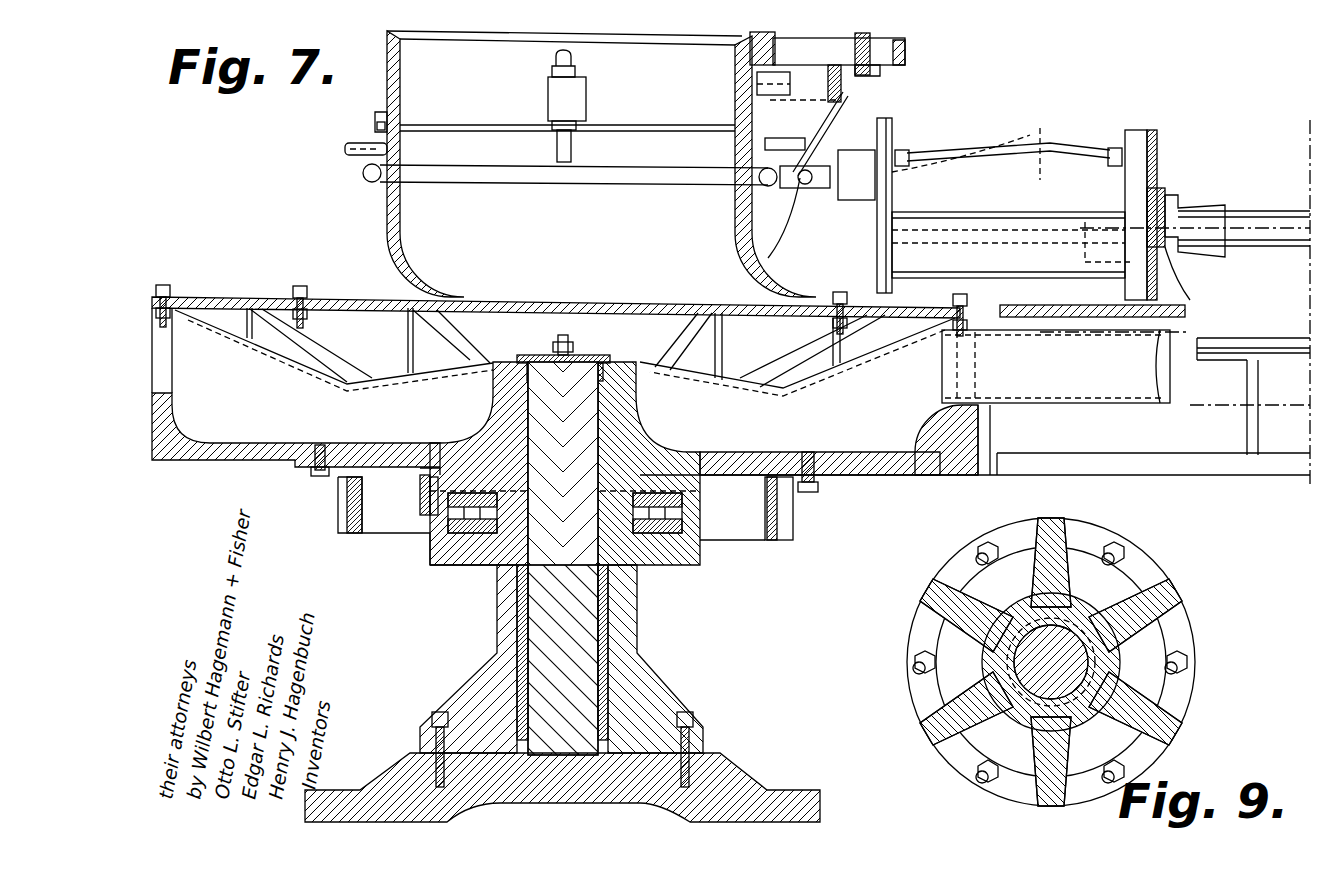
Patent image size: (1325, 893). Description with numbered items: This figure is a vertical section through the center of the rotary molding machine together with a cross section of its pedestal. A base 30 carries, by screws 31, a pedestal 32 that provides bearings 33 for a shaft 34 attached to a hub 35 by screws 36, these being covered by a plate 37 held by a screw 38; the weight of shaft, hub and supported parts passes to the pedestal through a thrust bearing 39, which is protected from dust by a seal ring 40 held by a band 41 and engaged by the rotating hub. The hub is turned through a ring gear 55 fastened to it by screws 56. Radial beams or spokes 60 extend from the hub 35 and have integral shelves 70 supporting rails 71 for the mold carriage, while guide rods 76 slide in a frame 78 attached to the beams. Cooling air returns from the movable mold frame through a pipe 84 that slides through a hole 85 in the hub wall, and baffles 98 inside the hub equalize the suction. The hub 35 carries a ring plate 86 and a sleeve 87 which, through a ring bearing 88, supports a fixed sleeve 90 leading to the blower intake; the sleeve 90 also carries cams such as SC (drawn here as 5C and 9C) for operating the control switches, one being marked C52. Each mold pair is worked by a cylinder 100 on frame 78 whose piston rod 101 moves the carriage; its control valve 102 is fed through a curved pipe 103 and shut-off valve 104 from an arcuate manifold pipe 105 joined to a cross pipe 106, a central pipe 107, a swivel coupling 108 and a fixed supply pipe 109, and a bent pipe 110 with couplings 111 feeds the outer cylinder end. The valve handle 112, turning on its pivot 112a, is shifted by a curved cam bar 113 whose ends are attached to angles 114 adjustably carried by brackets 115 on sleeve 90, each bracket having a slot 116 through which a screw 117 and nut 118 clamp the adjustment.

In FIG. 7, the base 30 is at (786, 792).
In FIG. 7, the screws 31 is at (692, 716).
In FIG. 7, the pedestal 32 is at (637, 620).
In FIG. 9, the pedestal 32 is at (907, 645).
In FIG. 7, the bearings 33 is at (517, 580).
In FIG. 7, the shaft 34 is at (598, 408).
In FIG. 9, the shaft 34 is at (1045, 658).
In FIG. 7, the hub 35 is at (745, 452).
In FIG. 7, the screws 36 is at (625, 362).
In FIG. 7, the plate 37 is at (599, 360).
In FIG. 7, the screw 38 is at (553, 348).
In FIG. 7, the thrust bearing 39 is at (428, 558).
In FIG. 7, the seal ring 40 is at (428, 475).
In FIG. 7, the band 41 is at (420, 494).
In FIG. 7, the ring gear 55 is at (338, 517).
In FIG. 7, the screws 56 is at (818, 488).
In FIG. 7, the beams or spokes 60 is at (1228, 462).
In FIG. 7, the shelves 70 is at (1247, 398).
In FIG. 7, the rails 71 is at (1260, 340).
In FIG. 7, the guide rods 76 is at (1280, 250).
In FIG. 7, the frame 78 is at (1157, 145).
In FIG. 7, the pipe 84 is at (1110, 403).
In FIG. 7, the hole 85 is at (945, 437).
In FIG. 7, the ring plate 86 is at (236, 298).
In FIG. 7, the sleeve 87 is at (387, 225).
In FIG. 7, the ring bearing 88 is at (375, 118).
In FIG. 7, the sleeve 90 is at (387, 55).
In FIG. 7, the baffles 98 is at (540, 318).
In FIG. 7, the pipe connection 9C is at (345, 149).
In FIG. 7, the pipe connection 5C is at (765, 148).
In FIG. 7, the valve block C52 is at (757, 95).
In FIG. 7, the cylinder 100 is at (1030, 268).
In FIG. 7, the rod 101 is at (1282, 204).
In FIG. 7, the control valve 102 is at (852, 202).
In FIG. 7, the curved pipe 103 is at (966, 167).
In FIG. 7, the shut-off valve 104 is at (792, 195).
In FIG. 7, the arcuate pipe 105 is at (363, 176).
In FIG. 7, the cross pipe 106 is at (574, 186).
In FIG. 7, the pipe 107 is at (557, 152).
In FIG. 7, the swivel coupling 108 is at (548, 106).
In FIG. 7, the fixed pipe 109 is at (552, 70).
In FIG. 7, the bent pipe 110 is at (1008, 169).
In FIG. 7, the couplings 111 is at (905, 148).
In FIG. 7, the operating handle 112 is at (850, 100).
In FIG. 7, the pivot 112a is at (790, 227).
In FIG. 7, the curved cam bar 113 is at (830, 102).
In FIG. 7, the angles 114 is at (828, 83).
In FIG. 7, the brackets 115 is at (905, 58).
In FIG. 7, the slot 116 is at (880, 46).
In FIG. 7, the screw 117 is at (852, 52).
In FIG. 7, the nut 118 is at (876, 72).